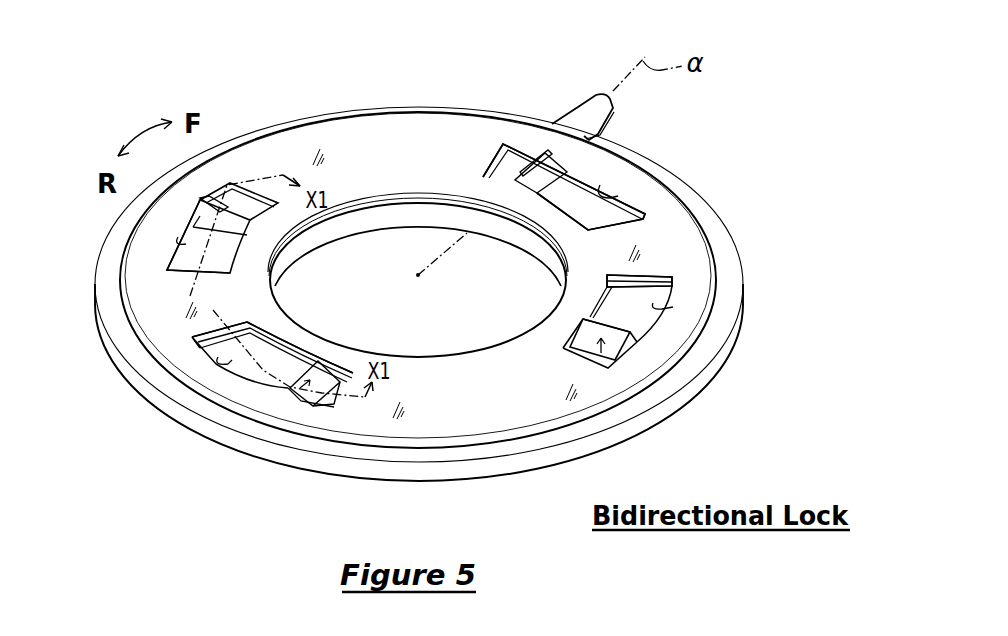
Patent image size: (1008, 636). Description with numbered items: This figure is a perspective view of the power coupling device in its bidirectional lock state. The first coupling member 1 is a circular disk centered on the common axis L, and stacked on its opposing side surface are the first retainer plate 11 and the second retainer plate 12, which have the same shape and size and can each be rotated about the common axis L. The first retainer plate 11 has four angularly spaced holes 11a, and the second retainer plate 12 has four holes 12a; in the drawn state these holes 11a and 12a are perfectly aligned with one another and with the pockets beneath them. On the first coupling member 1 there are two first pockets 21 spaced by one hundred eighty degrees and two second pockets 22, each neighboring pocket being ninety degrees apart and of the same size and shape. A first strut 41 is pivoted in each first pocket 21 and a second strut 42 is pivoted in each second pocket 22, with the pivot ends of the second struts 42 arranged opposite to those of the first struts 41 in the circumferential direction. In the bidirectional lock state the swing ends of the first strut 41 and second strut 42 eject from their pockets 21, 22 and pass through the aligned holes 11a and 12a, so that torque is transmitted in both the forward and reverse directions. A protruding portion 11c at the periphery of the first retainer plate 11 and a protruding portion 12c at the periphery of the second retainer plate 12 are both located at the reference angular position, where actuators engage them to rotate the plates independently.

The first coupling member 1 is at (655, 423).
The first retainer plate 11 is at (437, 450).
The holes of the first retainer plate 11a is at (423, 259).
The protruding portion of the first retainer plate 11c is at (608, 127).
The second retainer plate 12 is at (487, 417).
The holes of the second retainer plate 12a is at (180, 238).
The protruding portion of the second retainer plate 12c is at (581, 115).
The first pocket 21 is at (237, 228).
The second pocket 22 is at (533, 187).
The first strut 41 is at (220, 190).
The second strut 42 is at (530, 163).
The common axis L is at (420, 277).